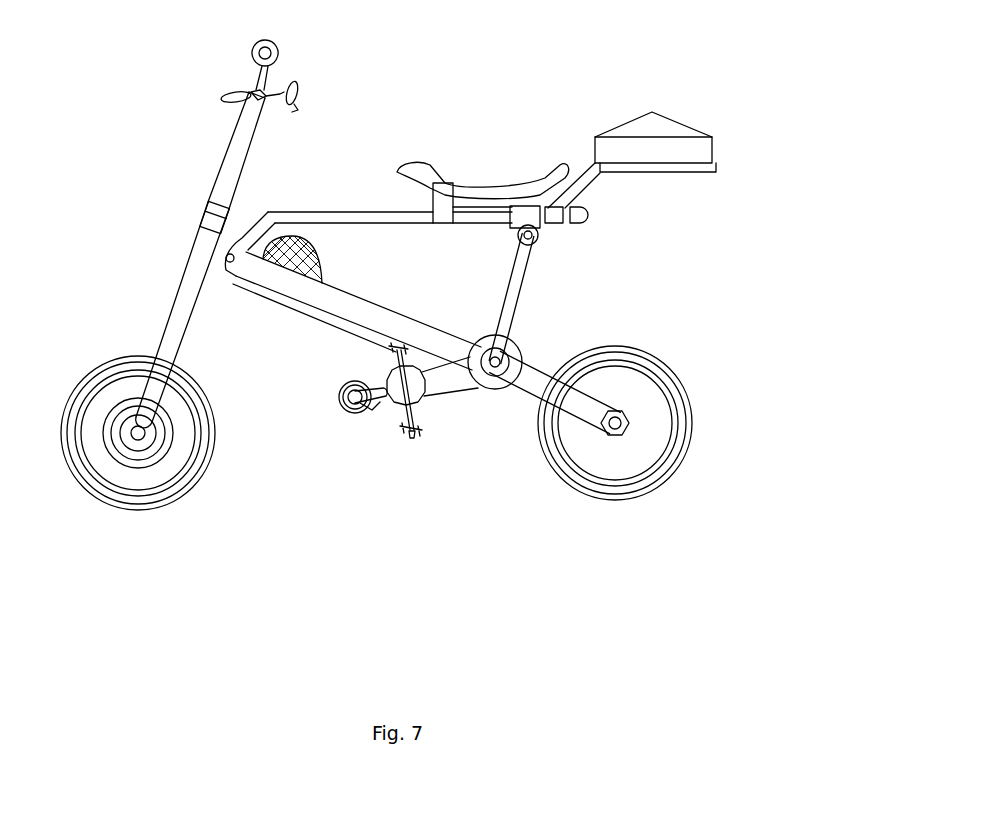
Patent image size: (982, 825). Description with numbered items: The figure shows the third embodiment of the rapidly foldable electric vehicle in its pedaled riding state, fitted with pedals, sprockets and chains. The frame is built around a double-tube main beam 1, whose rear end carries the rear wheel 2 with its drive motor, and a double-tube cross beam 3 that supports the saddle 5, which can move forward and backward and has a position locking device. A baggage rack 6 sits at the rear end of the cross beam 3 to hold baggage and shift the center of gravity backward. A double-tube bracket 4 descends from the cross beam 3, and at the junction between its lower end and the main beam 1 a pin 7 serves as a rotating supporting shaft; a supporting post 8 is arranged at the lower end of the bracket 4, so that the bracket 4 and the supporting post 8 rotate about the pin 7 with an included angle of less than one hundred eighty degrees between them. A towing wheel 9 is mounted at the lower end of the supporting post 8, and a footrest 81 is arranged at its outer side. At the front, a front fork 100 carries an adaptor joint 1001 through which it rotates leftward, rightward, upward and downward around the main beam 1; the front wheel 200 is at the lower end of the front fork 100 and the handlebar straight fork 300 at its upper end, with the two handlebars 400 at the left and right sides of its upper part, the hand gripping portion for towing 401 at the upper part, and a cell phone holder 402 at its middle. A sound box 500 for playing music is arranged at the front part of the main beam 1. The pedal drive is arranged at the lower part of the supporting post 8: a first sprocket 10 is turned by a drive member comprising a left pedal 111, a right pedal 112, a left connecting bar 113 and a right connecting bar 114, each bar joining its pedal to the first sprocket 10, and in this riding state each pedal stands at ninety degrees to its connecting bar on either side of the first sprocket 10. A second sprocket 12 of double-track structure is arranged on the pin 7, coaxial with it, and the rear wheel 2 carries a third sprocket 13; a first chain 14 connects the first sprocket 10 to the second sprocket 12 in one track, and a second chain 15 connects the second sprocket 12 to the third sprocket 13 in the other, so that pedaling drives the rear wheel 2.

The main beam 1 is at (390, 318).
The rear wheel 2 is at (622, 480).
The cross beam 3 is at (330, 220).
The bracket 4 is at (522, 262).
The saddle 5 is at (455, 187).
The baggage rack 6 is at (650, 123).
The pin 7 is at (500, 384).
The supporting post 8 is at (375, 400).
The towing wheel 9 is at (367, 410).
The first sprocket 10 is at (391, 405).
The second sprocket 12 is at (505, 350).
The third sprocket 13 is at (625, 425).
The first chain 14 is at (459, 390).
The second chain 15 is at (525, 345).
The footrest 81 is at (349, 400).
The front fork 100 is at (180, 310).
The left pedal 111 is at (370, 342).
The right pedal 112 is at (413, 423).
The left connecting bar 113 is at (392, 350).
The right connecting bar 114 is at (407, 430).
The front wheel 200 is at (155, 505).
The handlebar straight fork 300 is at (225, 188).
The handlebar 400 is at (253, 92).
The hand gripping portion for towing 401 is at (253, 50).
The cell phone holder 402 is at (287, 85).
The sound box 500 is at (320, 265).
The adaptor joint 1001 is at (230, 255).